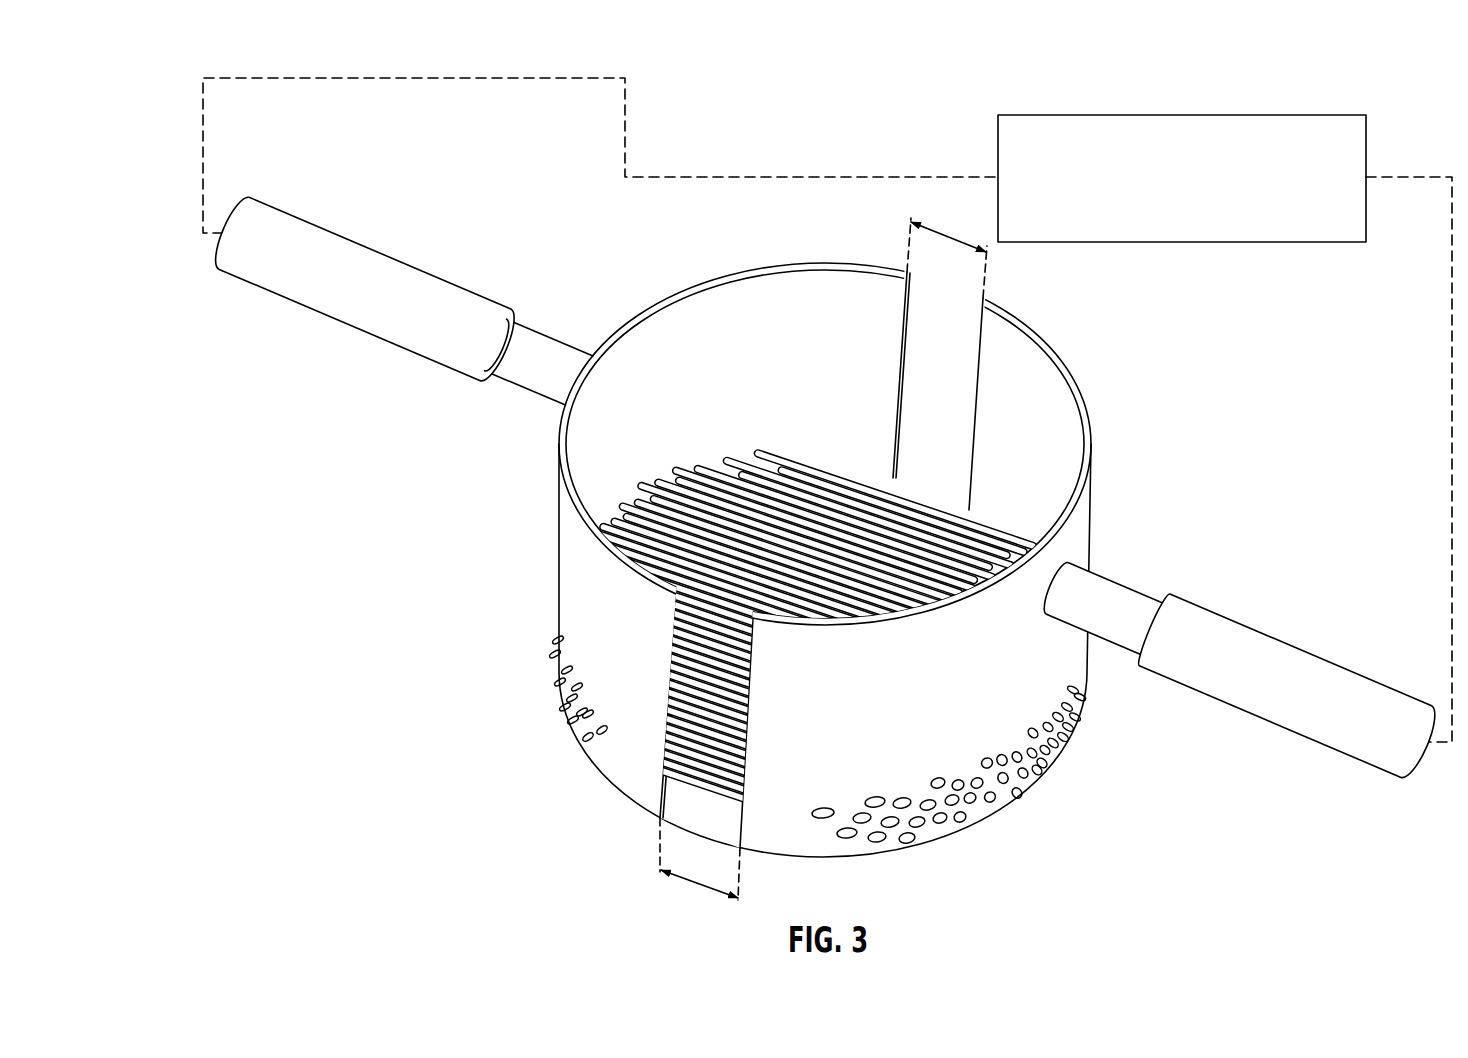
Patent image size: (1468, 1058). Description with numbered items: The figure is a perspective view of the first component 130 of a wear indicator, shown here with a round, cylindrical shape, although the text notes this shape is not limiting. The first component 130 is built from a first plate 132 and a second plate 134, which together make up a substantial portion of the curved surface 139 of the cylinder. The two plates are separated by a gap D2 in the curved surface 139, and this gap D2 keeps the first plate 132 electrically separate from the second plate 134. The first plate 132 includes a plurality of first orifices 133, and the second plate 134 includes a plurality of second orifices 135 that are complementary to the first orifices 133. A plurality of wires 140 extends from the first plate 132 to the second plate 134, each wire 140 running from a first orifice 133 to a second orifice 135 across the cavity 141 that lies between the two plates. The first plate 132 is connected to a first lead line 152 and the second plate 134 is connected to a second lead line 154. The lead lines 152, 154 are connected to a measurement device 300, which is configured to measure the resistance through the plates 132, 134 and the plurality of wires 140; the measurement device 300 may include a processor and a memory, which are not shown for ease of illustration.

The first component 130 is at (163, 86).
The measurement device 300 is at (1326, 114).
The first plate 132 is at (840, 268).
The second plate 134 is at (1038, 338).
The first orifices 133 is at (586, 736).
The second orifices 135 is at (1019, 789).
The curved surface 139 is at (592, 633).
The wires 140 is at (920, 486).
The cavity 141 is at (929, 405).
The first lead line 152 is at (376, 266).
The second lead line 154 is at (1293, 662).
The gap D2 is at (955, 247).